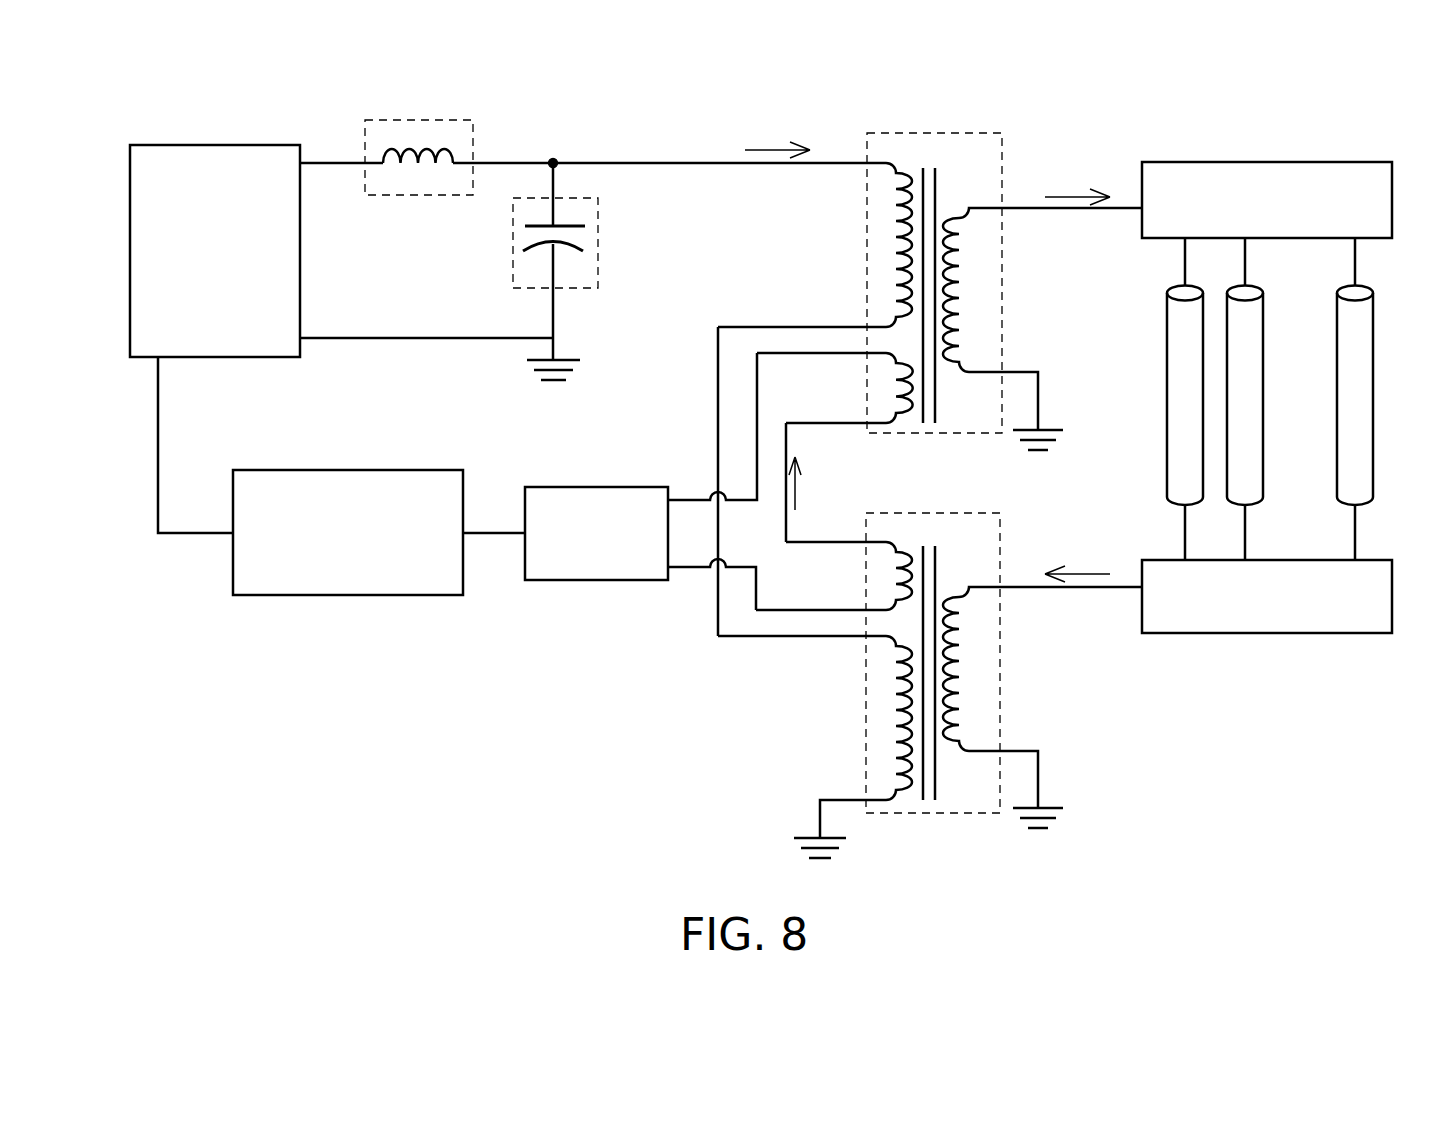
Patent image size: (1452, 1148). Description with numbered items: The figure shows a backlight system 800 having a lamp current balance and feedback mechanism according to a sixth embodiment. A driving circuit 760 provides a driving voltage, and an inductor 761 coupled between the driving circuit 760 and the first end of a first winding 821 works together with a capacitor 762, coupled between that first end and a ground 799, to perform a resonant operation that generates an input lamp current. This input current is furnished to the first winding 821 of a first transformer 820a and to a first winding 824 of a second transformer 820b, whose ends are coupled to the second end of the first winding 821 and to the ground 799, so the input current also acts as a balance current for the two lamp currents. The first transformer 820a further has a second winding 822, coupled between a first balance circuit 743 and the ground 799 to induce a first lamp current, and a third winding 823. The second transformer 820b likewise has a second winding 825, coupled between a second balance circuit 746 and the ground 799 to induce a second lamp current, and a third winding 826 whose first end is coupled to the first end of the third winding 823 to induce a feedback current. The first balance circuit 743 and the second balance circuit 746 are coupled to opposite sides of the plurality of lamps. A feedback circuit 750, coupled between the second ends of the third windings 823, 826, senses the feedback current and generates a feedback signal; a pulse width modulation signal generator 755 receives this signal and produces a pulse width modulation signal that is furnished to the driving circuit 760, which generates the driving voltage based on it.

The backlight system 800 is at (412, 759).
The driving circuit 760 is at (242, 145).
The inductor 761 is at (455, 120).
The capacitor 762 is at (598, 268).
The ground 799 is at (598, 376).
The pulse width modulation signal generator 755 is at (385, 595).
The feedback circuit 750 is at (598, 580).
The first transformer 820a is at (930, 268).
The second transformer 820b is at (930, 657).
The first winding 821 is at (880, 242).
The second winding 822 is at (977, 302).
The third winding 823 is at (880, 385).
The first winding 824 is at (880, 713).
The second winding 825 is at (977, 683).
The third winding 826 is at (880, 572).
The first balance circuit 743 is at (1357, 162).
The second balance circuit 746 is at (1358, 633).